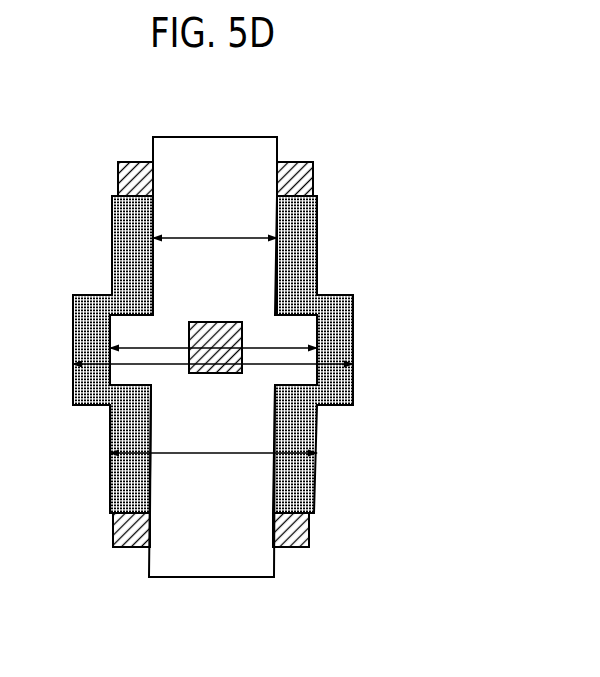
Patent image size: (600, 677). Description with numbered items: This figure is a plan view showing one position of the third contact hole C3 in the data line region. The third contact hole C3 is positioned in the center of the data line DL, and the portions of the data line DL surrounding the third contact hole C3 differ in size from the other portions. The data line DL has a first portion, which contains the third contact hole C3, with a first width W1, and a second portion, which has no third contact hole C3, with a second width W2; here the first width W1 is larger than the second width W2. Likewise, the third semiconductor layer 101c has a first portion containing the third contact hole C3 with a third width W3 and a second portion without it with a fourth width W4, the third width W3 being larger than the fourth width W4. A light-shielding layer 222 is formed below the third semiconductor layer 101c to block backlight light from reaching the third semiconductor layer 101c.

The third semiconductor layer 101c is at (347, 323).
The data line DL is at (208, 562).
The light-shielding layer 222 is at (313, 172).
The third contact hole C3 is at (217, 322).
The first width W1 is at (213, 333).
The second width W2 is at (215, 224).
The third width W3 is at (213, 377).
The fourth width W4 is at (213, 438).